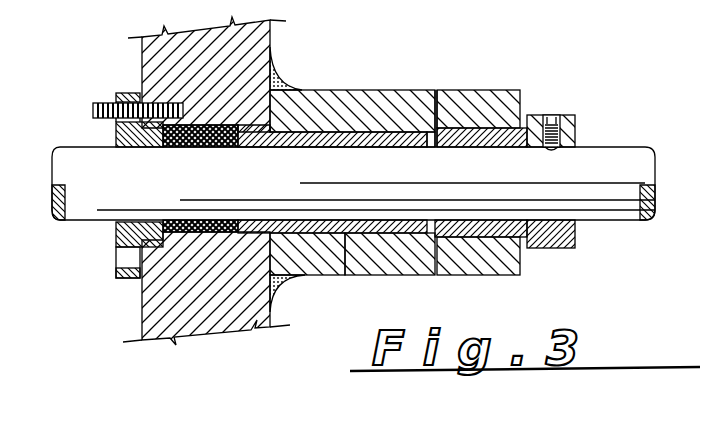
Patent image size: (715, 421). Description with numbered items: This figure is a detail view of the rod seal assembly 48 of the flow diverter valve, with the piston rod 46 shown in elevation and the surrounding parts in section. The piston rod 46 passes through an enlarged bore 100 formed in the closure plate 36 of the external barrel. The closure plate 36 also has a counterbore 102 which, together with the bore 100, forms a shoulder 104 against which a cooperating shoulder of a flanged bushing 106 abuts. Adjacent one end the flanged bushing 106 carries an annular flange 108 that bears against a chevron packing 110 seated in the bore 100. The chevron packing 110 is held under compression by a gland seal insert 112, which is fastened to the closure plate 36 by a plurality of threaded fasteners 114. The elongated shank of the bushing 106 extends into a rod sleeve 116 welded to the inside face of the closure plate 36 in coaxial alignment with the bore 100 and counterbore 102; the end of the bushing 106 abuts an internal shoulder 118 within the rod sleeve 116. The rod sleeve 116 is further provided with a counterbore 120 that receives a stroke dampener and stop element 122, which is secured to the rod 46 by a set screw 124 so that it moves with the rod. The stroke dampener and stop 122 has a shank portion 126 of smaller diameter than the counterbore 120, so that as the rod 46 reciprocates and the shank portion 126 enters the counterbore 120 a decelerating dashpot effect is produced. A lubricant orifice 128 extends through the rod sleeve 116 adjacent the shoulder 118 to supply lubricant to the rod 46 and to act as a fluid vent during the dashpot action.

The closure plate 36 is at (158, 58).
The piston rod 46 is at (118, 189).
The rod seal assembly 48 is at (353, 80).
The enlarged bore 100 is at (219, 125).
The counterbore 102 is at (266, 242).
The shoulder 104 is at (250, 246).
The flanged bushing 106 is at (345, 276).
The annular flange 108 is at (284, 86).
The chevron packing 110 is at (198, 242).
The gland seal insert 112 is at (116, 127).
The threaded fasteners 114 is at (96, 108).
The rod sleeve 116 is at (376, 106).
The internal shoulder 118 is at (430, 253).
The counterbore 120 is at (480, 94).
The stroke dampener and stop element 122 is at (492, 226).
The set screw 124 is at (576, 128).
The shank portion 126 is at (523, 113).
The lubricant orifice 128 is at (446, 92).